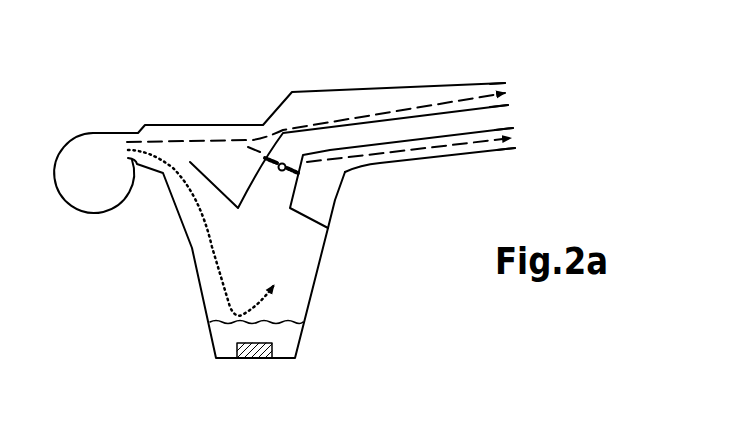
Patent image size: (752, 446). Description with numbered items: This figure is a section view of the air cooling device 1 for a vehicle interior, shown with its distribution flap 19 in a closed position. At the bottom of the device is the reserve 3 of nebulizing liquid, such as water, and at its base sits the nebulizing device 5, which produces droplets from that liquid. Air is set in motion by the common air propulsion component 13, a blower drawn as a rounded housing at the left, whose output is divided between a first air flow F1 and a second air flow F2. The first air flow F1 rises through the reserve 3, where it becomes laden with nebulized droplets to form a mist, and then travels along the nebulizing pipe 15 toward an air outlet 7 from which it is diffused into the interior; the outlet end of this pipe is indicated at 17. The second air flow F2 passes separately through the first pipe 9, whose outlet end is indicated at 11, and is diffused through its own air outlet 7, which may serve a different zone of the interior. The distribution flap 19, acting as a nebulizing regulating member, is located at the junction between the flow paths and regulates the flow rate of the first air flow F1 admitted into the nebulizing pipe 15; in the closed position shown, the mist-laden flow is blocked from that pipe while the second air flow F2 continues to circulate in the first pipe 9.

The cooling device 1 is at (185, 96).
The reserve of liquid 3 is at (292, 340).
The nebulizing device 5 is at (255, 363).
The air outlet 7 is at (546, 92).
The first pipe 9 is at (405, 139).
The second channel outlet 11 is at (508, 115).
The common air propulsion component 13 is at (98, 213).
The nebulizing pipe 15 is at (372, 92).
The first channel outlet 17 is at (510, 90).
The distribution flap 19 is at (266, 172).
The first air flow F1 is at (247, 315).
The second air flow F2 is at (452, 147).